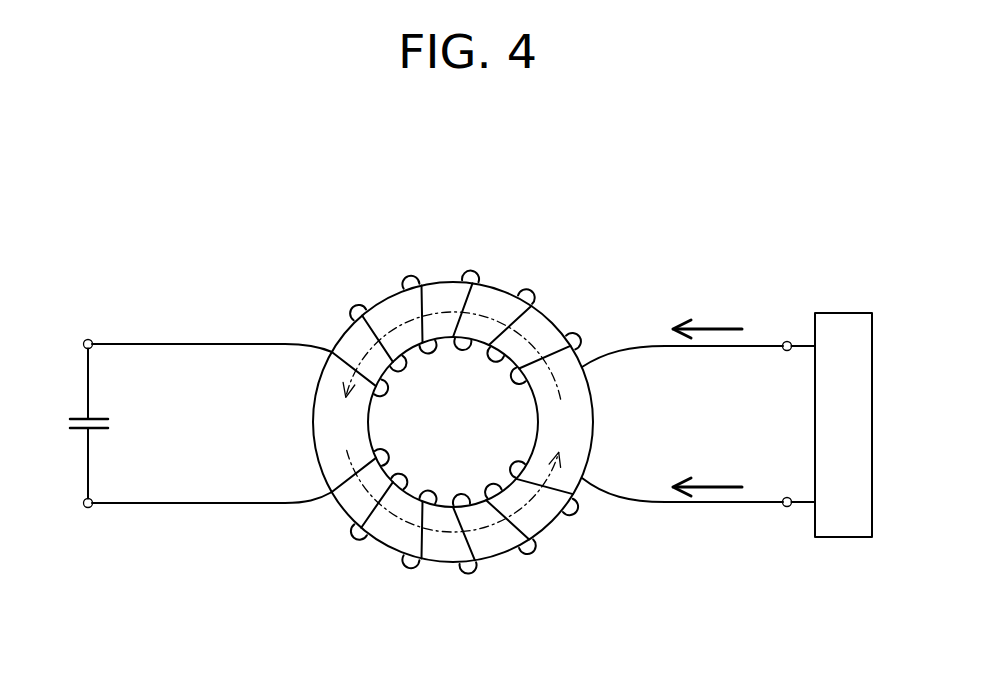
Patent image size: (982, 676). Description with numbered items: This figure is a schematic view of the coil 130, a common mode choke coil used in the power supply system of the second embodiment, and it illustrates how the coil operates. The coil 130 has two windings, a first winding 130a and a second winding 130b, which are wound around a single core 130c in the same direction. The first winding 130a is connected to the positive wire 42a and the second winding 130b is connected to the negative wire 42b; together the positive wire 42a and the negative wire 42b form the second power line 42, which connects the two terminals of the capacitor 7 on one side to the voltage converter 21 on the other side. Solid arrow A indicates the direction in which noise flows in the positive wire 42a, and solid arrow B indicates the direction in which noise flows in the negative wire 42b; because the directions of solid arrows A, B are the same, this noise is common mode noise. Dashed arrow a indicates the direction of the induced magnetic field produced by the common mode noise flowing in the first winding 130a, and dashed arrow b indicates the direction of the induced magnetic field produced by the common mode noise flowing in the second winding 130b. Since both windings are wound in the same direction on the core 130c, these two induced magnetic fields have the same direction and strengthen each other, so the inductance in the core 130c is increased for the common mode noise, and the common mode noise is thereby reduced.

The coil 130 is at (405, 433).
The first winding 130a is at (478, 280).
The second winding 130b is at (480, 573).
The core 130c is at (313, 422).
The capacitor 7 is at (82, 418).
The second power line 42 is at (698, 458).
The positive wire 42a is at (717, 350).
The negative wire 42b is at (717, 506).
The voltage converter 21 is at (843, 540).
The solid arrow A is at (727, 326).
The solid arrow B is at (708, 484).
The dashed arrow a is at (525, 337).
The dashed arrow b is at (527, 510).